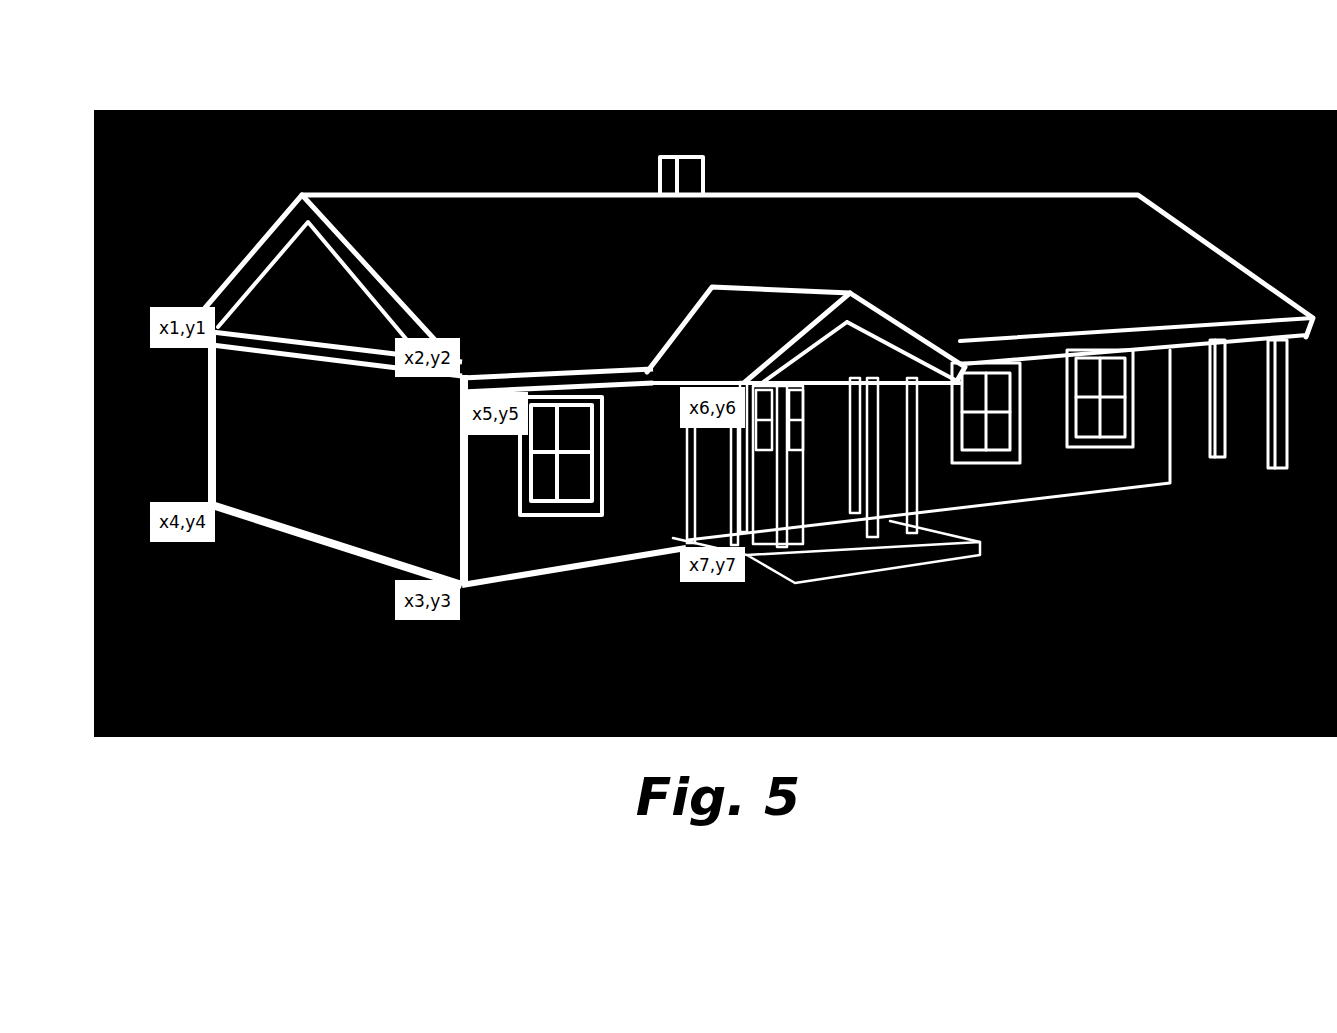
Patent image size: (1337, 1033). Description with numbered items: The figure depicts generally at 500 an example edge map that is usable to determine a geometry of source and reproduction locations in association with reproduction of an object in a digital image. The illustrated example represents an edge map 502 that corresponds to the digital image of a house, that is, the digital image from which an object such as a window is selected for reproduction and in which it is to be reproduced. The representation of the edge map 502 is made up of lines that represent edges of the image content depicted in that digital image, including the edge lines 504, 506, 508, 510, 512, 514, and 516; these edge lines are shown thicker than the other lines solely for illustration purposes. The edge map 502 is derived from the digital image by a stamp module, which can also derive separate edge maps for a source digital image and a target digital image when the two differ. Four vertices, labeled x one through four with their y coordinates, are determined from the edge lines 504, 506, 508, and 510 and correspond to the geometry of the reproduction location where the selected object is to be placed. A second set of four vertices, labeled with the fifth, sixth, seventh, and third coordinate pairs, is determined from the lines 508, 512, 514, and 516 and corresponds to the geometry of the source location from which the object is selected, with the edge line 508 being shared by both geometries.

The example edge map 500 is at (211, 82).
The edge map 502 is at (438, 109).
The edge line 504 is at (205, 437).
The edge line 506 is at (372, 355).
The edge line 508 is at (457, 523).
The edge line 510 is at (318, 545).
The edge line 512 is at (605, 380).
The edge line 514 is at (670, 545).
The edge line 516 is at (580, 570).